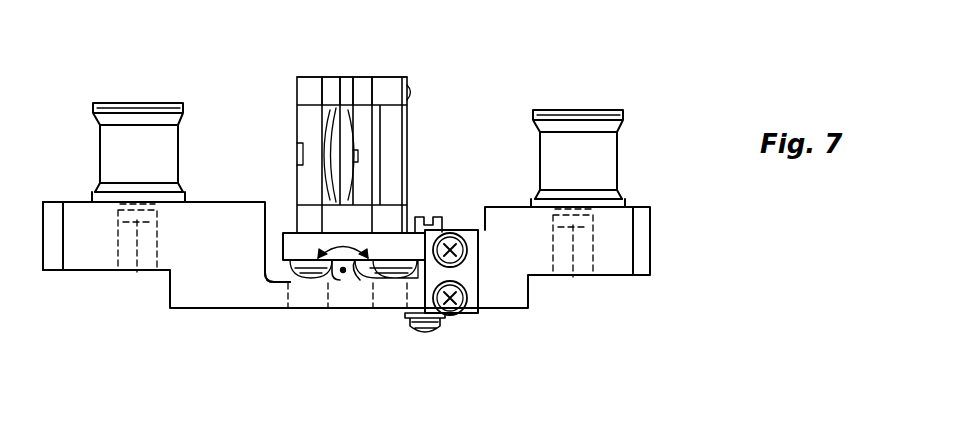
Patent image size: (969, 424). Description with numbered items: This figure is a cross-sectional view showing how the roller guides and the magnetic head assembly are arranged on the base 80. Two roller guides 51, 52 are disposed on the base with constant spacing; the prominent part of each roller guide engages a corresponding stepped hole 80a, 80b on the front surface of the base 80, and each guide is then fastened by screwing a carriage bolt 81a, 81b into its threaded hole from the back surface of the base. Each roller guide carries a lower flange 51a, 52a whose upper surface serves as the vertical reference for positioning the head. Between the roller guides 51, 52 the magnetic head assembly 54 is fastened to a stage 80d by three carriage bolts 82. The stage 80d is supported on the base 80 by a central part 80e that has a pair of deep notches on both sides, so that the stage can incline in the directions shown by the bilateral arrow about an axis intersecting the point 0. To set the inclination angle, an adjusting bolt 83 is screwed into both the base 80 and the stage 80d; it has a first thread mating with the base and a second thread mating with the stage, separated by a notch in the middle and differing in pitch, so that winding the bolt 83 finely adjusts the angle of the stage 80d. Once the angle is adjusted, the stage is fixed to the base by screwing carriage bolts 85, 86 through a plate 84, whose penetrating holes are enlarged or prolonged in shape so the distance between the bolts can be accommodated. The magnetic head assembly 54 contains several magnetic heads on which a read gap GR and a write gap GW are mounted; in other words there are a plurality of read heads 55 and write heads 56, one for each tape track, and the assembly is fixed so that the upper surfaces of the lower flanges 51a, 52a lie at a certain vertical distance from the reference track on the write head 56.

The roller guide 51 is at (114, 96).
The lower flange 51a is at (108, 196).
The roller guide 52 is at (557, 100).
The lower flange 52a is at (605, 195).
The magnetic head assembly 54 is at (367, 63).
The read head 55 is at (365, 128).
The write head 56 is at (351, 78).
The write gap GW is at (338, 78).
The read gap GR is at (373, 78).
The base 80 is at (252, 300).
The stepped hole 80a is at (110, 212).
The stepped hole 80b is at (590, 215).
The stage 80d is at (285, 247).
The central part 80e is at (360, 282).
The carriage bolt 81a is at (134, 275).
The carriage bolt 81b is at (565, 285).
The carriage bolts 82 is at (301, 281).
The adjusting bolt 83 is at (438, 218).
The plate 84 is at (479, 276).
The carriage bolt 85 is at (467, 316).
The carriage bolt 86 is at (452, 232).
The point O 0 is at (342, 273).